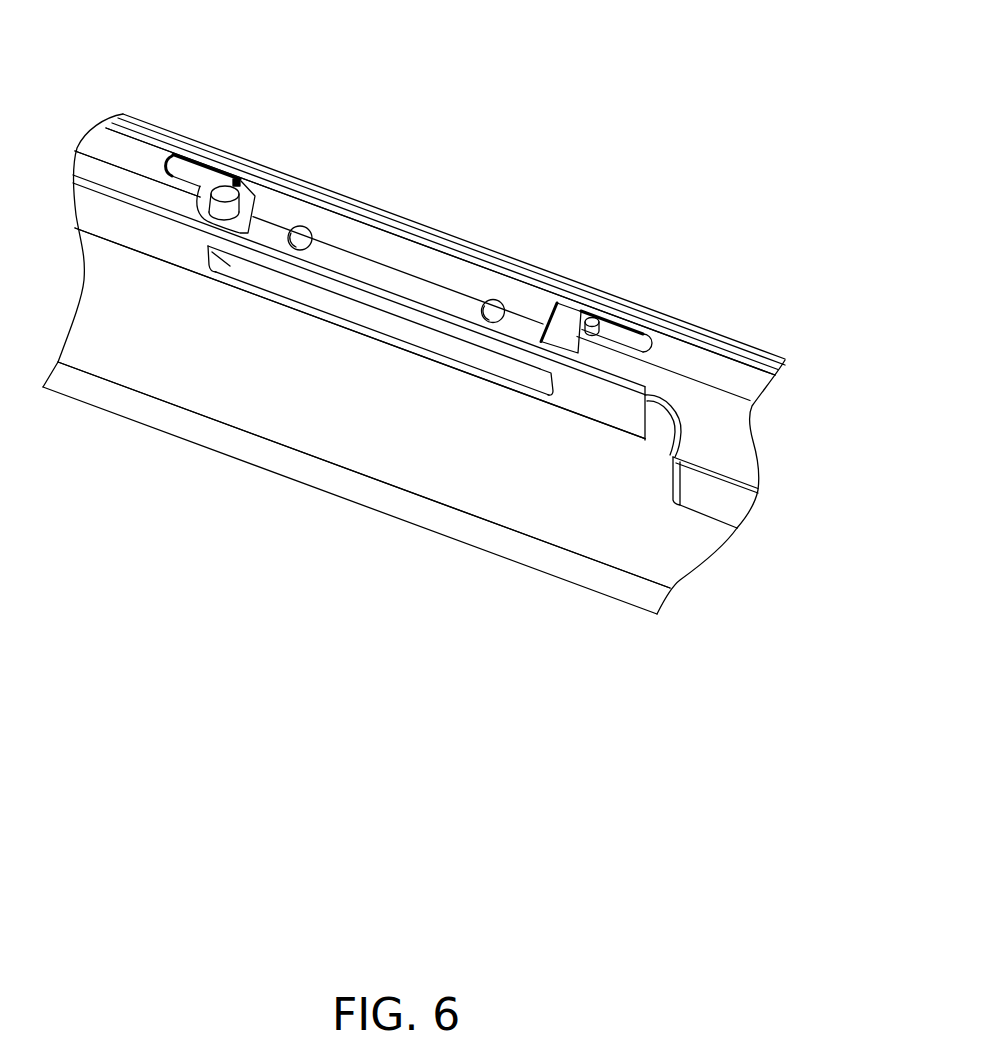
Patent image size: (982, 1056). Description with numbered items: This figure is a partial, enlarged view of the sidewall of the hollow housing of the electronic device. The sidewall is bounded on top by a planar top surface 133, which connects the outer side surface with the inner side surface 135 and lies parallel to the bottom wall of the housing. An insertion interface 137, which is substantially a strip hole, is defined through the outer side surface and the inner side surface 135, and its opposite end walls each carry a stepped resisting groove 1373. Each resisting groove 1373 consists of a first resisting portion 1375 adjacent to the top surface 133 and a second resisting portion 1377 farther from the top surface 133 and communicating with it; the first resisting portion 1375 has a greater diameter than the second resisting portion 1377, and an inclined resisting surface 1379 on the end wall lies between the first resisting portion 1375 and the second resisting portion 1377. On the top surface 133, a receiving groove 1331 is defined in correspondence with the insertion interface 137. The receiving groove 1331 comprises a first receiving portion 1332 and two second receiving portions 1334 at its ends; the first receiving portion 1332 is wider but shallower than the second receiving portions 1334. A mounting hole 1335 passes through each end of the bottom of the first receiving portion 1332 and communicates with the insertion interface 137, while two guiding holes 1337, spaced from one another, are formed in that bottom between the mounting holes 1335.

The top surface 133 is at (690, 350).
The inner side surface 135 is at (587, 510).
The insertion interface 137 is at (295, 290).
The receiving groove 1331 is at (425, 251).
The first receiving portion 1332 is at (465, 272).
The second receiving portion 1334 is at (627, 278).
The mounting hole 1335 is at (556, 330).
The guiding hole 1337 is at (487, 316).
The resisting groove 1373 is at (249, 119).
The first resisting portion 1375 is at (221, 186).
The second resisting portion 1377 is at (203, 212).
The resisting surface 1379 is at (237, 183).